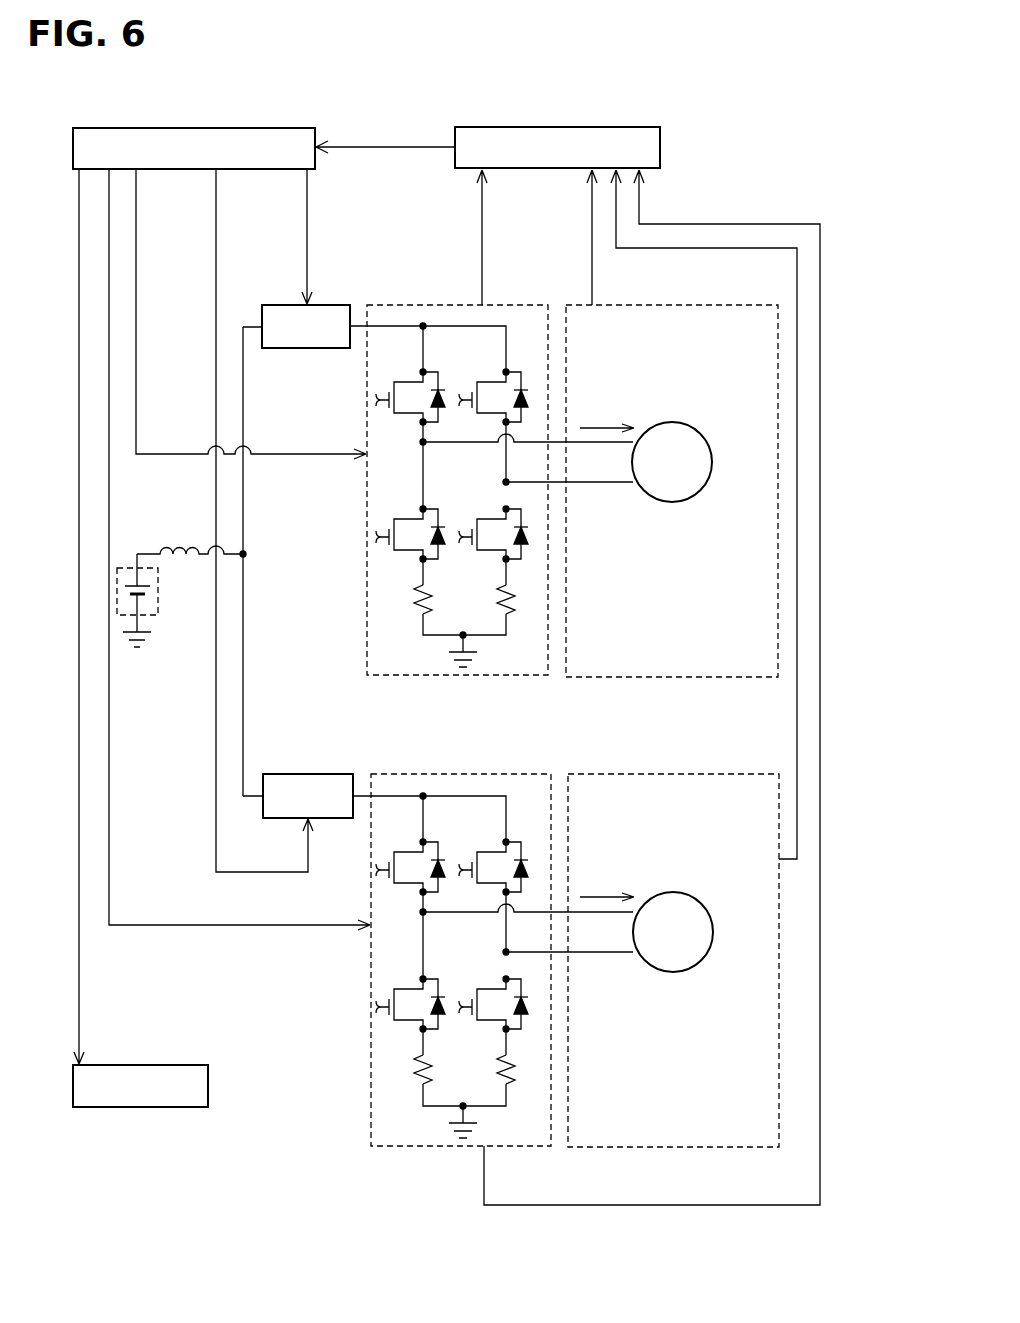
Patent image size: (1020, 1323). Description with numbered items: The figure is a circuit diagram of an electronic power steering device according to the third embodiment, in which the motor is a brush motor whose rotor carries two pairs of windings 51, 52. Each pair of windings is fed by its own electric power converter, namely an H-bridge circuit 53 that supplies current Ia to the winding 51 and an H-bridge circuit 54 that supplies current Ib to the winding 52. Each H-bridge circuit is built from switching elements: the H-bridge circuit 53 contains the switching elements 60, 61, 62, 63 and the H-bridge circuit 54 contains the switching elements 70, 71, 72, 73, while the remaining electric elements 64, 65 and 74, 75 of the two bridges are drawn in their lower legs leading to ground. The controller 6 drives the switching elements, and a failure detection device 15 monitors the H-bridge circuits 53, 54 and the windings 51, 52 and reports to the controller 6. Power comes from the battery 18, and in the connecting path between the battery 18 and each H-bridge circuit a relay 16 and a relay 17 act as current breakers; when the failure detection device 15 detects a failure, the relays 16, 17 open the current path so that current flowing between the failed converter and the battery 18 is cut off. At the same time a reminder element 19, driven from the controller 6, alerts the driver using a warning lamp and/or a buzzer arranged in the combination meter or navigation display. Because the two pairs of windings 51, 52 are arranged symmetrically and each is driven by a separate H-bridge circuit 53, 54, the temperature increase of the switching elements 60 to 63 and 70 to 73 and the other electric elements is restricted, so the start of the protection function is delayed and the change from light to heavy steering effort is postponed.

The controller 6 is at (262, 127).
The failure detection device 15 is at (606, 127).
The relay 16 is at (319, 305).
The relay 17 is at (324, 774).
The battery 18 is at (152, 618).
The reminder element 19 is at (157, 1064).
The winding 51 is at (712, 677).
The winding 52 is at (712, 1147).
The H-bridge circuit 53 is at (500, 507).
The H-bridge circuit 54 is at (502, 977).
The switching element 60 is at (438, 382).
The switching element 61 is at (520, 382).
The switching element 62 is at (438, 522).
The switching element 63 is at (520, 522).
The shunt resistor 64 is at (432, 592).
The shunt resistor 65 is at (515, 592).
The switching element 70 is at (440, 852).
The switching element 71 is at (522, 852).
The switching element 72 is at (440, 992).
The switching element 73 is at (522, 992).
The shunt resistor 74 is at (432, 1062).
The shunt resistor 75 is at (515, 1062).